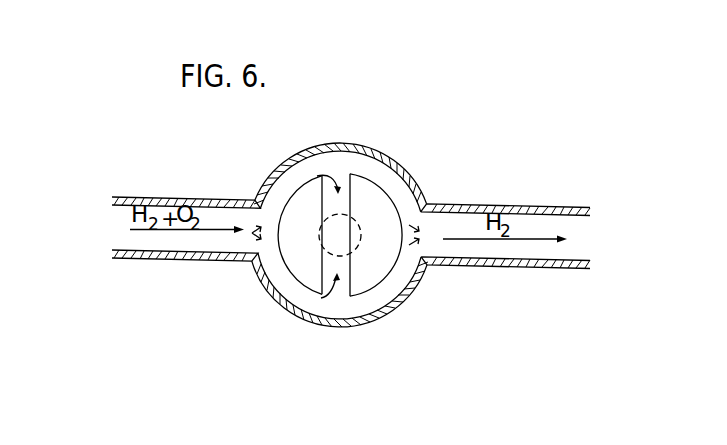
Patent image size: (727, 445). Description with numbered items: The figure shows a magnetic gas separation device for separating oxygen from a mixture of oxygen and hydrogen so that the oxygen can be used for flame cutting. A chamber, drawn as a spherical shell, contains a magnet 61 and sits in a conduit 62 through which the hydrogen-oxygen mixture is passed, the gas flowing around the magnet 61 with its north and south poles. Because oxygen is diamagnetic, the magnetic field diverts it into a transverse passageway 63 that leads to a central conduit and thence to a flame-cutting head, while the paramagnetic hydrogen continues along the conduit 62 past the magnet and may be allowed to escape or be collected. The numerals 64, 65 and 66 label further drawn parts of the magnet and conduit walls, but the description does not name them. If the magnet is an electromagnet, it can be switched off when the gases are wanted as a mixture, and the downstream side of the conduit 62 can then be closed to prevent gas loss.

The magnet 61 is at (338, 147).
The conduit 62 is at (453, 227).
The transverse passageway 63 is at (342, 290).
The magnet pole pieces 64 is at (307, 203).
The gap between pole pieces 65 is at (320, 241).
The outlet pipe lower wall 66 is at (585, 242).